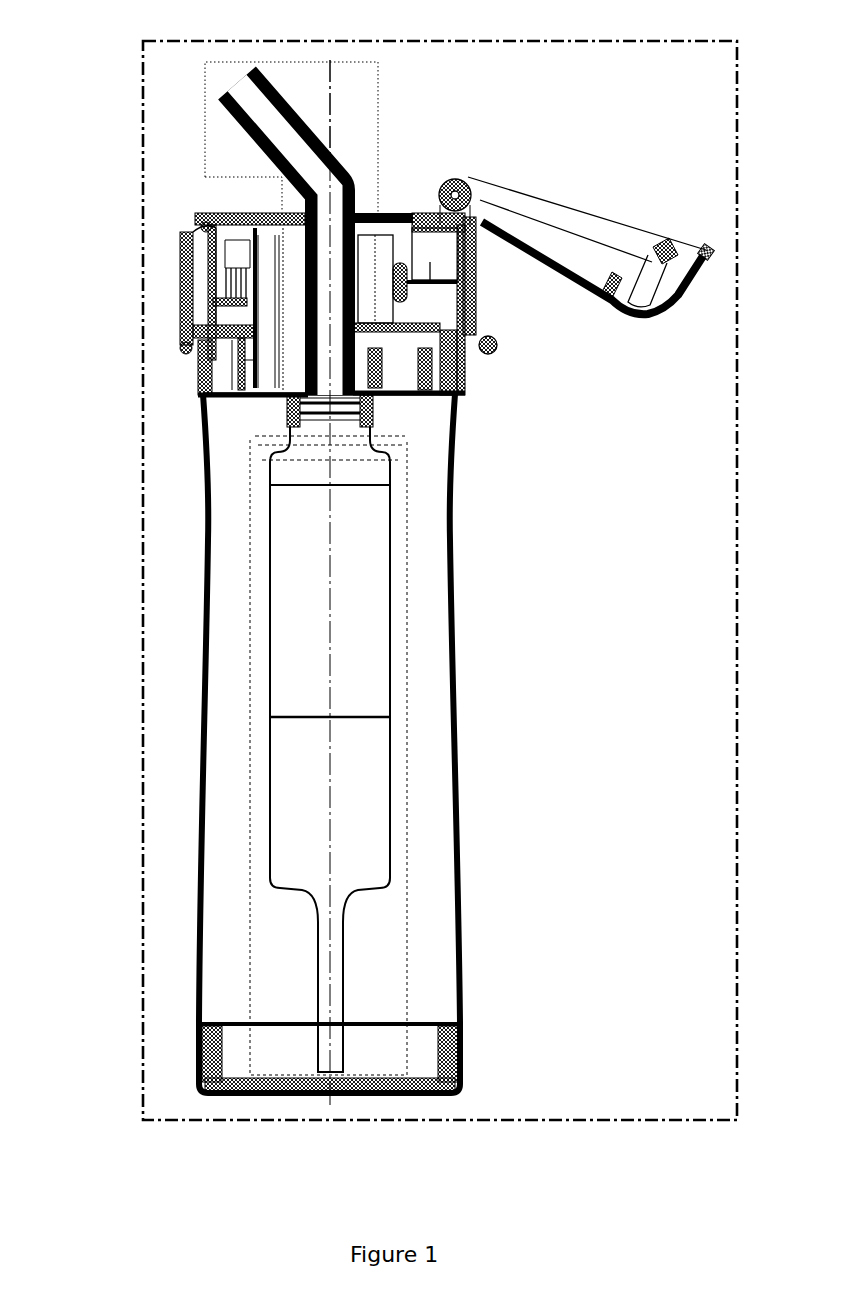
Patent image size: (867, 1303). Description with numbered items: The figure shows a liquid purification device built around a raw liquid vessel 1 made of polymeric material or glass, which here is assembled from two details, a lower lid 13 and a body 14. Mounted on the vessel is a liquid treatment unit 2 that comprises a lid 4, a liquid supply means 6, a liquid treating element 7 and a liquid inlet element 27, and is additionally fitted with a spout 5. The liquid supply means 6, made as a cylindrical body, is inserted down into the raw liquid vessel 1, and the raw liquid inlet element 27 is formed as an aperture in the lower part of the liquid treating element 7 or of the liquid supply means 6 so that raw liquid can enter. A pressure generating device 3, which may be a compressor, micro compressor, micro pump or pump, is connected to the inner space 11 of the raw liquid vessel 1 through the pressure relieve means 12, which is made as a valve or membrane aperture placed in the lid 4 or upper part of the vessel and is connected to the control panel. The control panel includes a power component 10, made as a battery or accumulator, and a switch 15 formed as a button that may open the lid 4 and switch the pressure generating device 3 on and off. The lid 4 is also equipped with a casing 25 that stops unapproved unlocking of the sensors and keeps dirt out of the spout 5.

The raw liquid vessel 1 is at (141, 708).
The liquid treatment unit 2 is at (250, 812).
The pressure generating device 3 is at (400, 293).
The lid 4 is at (390, 213).
The spout 5 is at (218, 125).
The liquid supply means 6 is at (335, 985).
The liquid treating element 7 is at (300, 608).
The power component 10 is at (200, 368).
The inner space 11 is at (437, 775).
The pressure relieve means 12 is at (212, 217).
The lower lid 13 is at (462, 1082).
The body 14 is at (460, 927).
The switch 15 is at (210, 295).
The casing 25 is at (565, 272).
The liquid inlet element 27 is at (240, 1090).